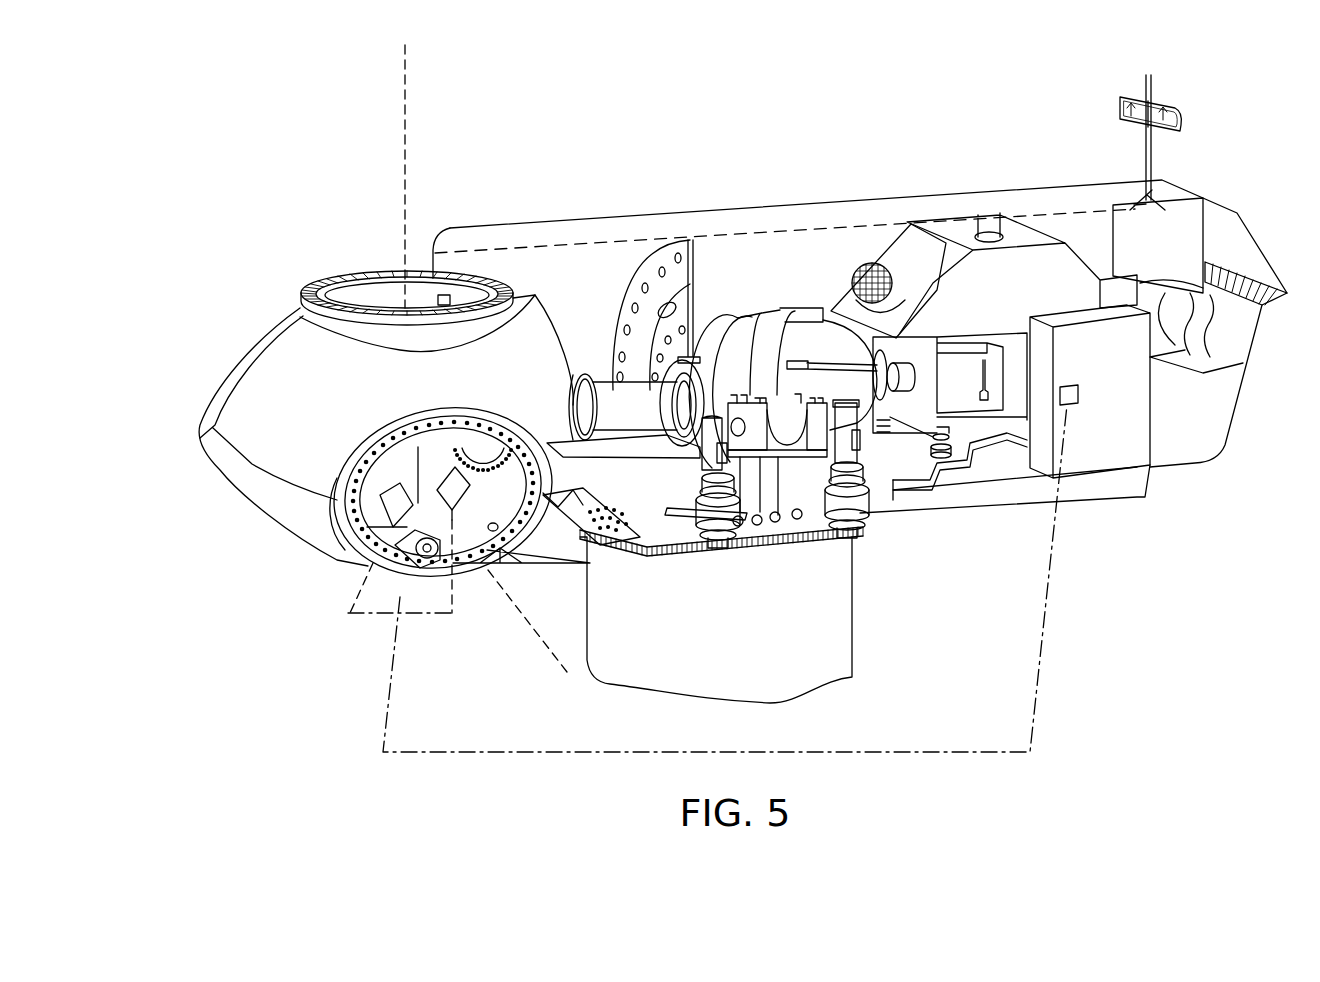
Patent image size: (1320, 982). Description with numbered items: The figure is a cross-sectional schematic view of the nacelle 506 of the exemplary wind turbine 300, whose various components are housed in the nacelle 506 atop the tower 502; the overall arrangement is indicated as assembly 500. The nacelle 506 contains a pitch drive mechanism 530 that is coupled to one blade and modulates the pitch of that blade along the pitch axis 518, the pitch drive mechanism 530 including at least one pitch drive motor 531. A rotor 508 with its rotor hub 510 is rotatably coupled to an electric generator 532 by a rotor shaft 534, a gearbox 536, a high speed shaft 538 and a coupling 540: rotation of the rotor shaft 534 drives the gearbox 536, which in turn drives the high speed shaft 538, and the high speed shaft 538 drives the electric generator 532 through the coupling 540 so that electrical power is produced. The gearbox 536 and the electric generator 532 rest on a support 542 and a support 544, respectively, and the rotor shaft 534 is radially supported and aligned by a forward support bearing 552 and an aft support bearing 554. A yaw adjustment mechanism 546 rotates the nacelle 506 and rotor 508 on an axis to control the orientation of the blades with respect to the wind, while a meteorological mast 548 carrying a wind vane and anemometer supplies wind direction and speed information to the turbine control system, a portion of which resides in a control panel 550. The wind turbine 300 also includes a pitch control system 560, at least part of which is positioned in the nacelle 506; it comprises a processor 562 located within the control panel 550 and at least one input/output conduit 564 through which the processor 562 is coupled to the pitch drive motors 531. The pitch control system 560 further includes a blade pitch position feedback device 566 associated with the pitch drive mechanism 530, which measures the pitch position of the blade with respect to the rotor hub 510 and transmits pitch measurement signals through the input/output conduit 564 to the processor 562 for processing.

The wind turbine system 500 is at (360, 137).
The pitch axis 518 is at (410, 80).
The nacelle 506 is at (623, 173).
The meteorological mast 548 is at (1185, 112).
The rotor 508 is at (187, 418).
The rotor hub 510 is at (305, 310).
The pitch drive mechanism 530 is at (373, 420).
The blade pitch position feedback device 566 is at (527, 477).
The pitch drive motor 531 is at (393, 497).
The wind turbine 300 is at (252, 538).
The pitch control system 560 is at (397, 588).
The input/output (I/O) conduit 564 is at (1040, 680).
The forward support bearing 552 is at (565, 470).
The tower 502 is at (790, 685).
The rotor shaft 534 is at (603, 395).
The aft support bearing 554 is at (712, 370).
The gearbox 536 is at (775, 350).
The support 542 is at (810, 500).
The yaw adjustment mechanism 546 is at (715, 530).
The high speed shaft 538 is at (905, 480).
The coupling 540 is at (890, 357).
The support 544 is at (948, 460).
The electric generator 532 is at (965, 490).
The control panel 550 is at (1145, 430).
The processor 562 is at (1075, 410).